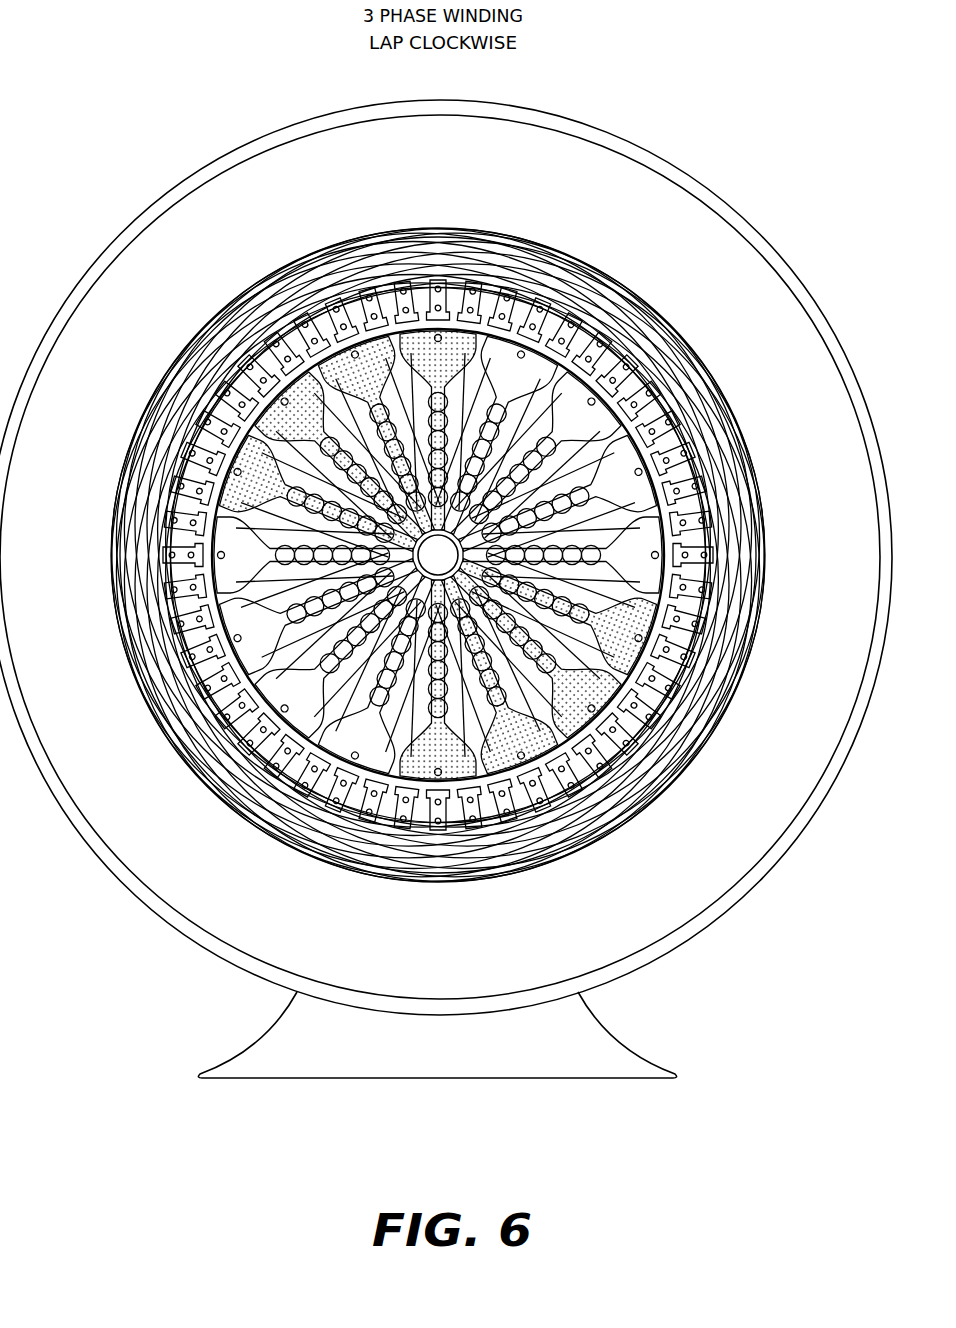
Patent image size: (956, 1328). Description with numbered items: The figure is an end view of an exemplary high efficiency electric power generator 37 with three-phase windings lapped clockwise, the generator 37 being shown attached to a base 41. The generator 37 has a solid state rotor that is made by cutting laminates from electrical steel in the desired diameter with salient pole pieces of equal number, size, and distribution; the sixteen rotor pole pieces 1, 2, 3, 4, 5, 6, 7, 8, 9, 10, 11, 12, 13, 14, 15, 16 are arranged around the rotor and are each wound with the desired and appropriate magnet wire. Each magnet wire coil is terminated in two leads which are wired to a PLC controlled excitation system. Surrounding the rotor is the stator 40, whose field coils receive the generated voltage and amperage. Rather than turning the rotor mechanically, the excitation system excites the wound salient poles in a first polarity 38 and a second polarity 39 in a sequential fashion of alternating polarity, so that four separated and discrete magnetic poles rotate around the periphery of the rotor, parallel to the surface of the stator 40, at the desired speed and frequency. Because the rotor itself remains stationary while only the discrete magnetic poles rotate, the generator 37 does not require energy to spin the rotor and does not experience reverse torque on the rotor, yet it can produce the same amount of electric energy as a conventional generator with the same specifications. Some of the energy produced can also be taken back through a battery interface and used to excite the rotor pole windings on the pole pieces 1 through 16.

The electric power generator 37 is at (752, 893).
The wound salient poles in a first polarity 38 is at (493, 555).
The wound salient poles in a second polarity 39 is at (698, 455).
The stator 40 is at (553, 240).
The base 41 is at (267, 1031).
The rotor pole piece 1 is at (526, 467).
The rotor pole piece 2 is at (553, 507).
The rotor pole piece 3 is at (562, 555).
The rotor pole piece 4 is at (553, 602).
The rotor pole piece 5 is at (526, 643).
The rotor pole piece 6 is at (485, 670).
The rotor pole piece 7 is at (438, 679).
The rotor pole piece 8 is at (390, 670).
The rotor pole piece 9 is at (350, 643).
The rotor pole piece 10 is at (322, 602).
The rotor pole piece 11 is at (313, 555).
The rotor pole piece 12 is at (322, 507).
The rotor pole piece 13 is at (350, 467).
The rotor pole piece 14 is at (390, 439).
The rotor pole piece 15 is at (438, 430).
The rotor pole piece 16 is at (485, 439).